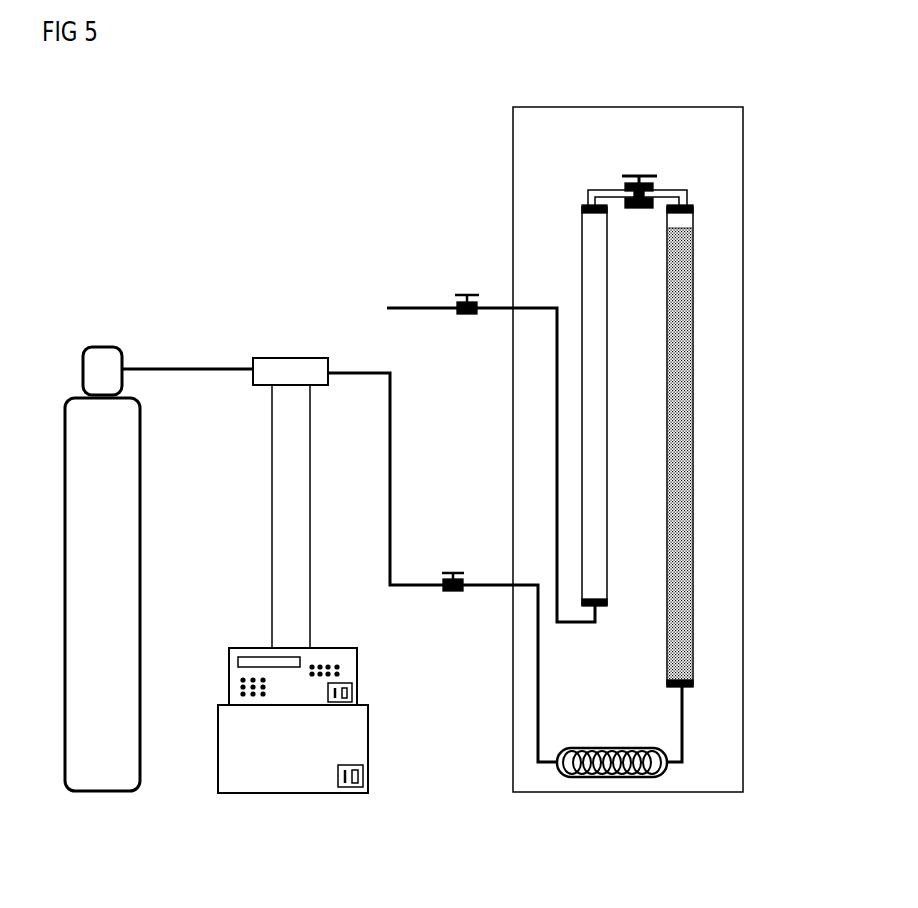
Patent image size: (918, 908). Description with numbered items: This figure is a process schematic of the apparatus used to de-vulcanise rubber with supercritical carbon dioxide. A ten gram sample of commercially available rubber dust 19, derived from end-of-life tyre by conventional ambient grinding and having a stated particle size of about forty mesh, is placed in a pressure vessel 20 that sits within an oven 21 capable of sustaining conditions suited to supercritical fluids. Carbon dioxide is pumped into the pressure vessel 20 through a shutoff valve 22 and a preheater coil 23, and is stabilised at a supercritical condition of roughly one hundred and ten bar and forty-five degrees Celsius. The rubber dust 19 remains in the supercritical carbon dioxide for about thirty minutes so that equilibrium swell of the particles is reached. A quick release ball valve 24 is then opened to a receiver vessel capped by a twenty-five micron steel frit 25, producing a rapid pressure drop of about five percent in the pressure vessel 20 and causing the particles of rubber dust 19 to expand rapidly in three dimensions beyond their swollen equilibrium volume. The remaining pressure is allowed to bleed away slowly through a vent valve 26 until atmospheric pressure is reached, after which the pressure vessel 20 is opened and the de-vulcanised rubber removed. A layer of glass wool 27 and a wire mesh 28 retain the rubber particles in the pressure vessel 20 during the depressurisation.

The rubber dust 19 is at (692, 385).
The pressure vessel 20 is at (745, 467).
The oven 21 is at (545, 120).
The shutoff valve 22 is at (447, 588).
The preheater coil 23 is at (626, 780).
The quick release ball valve 24 is at (640, 172).
The steel frit 25 is at (582, 207).
The vent valve 26 is at (462, 303).
The layer of glass wool 27 is at (695, 218).
The wire mesh 28 is at (687, 207).